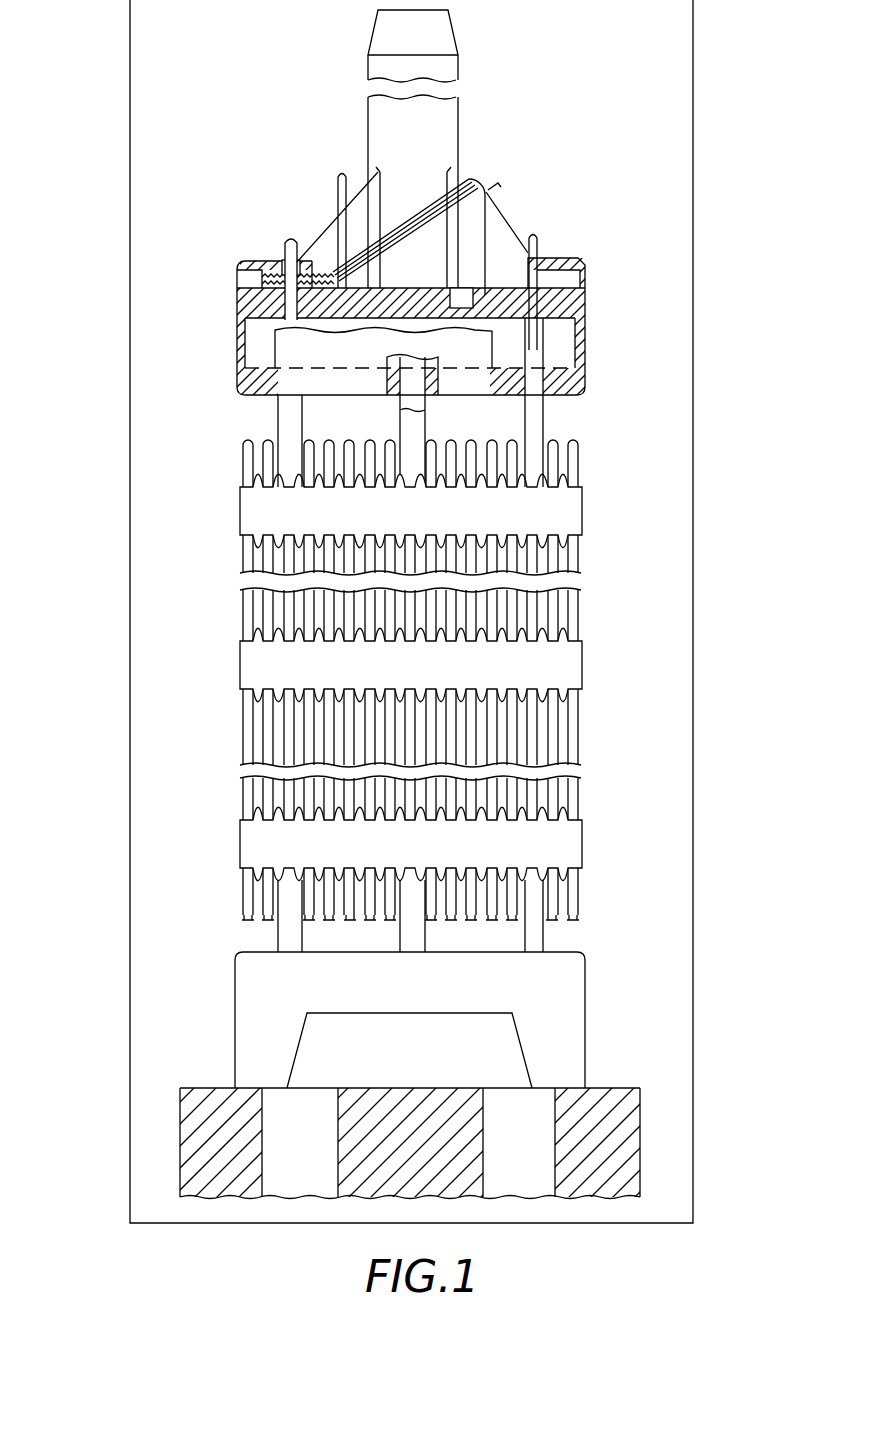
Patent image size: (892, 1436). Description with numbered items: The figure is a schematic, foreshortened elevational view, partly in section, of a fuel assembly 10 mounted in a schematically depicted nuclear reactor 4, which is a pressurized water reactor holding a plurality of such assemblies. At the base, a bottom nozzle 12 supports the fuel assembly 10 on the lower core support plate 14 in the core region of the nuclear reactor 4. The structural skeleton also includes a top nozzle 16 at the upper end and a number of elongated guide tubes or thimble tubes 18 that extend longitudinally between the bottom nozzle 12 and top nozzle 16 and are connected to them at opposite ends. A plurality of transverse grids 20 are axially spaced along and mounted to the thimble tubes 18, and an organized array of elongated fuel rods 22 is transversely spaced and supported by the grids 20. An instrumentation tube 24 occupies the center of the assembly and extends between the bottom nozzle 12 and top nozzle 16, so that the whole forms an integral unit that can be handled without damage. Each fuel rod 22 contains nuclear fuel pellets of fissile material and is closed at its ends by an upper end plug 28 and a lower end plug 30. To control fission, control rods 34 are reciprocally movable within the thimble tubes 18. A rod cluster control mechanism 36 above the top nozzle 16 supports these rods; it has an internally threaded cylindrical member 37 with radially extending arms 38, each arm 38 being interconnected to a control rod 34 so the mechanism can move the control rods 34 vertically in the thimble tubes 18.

The nuclear reactor 4 is at (700, 597).
The fuel assembly 10 is at (419, 630).
The bottom nozzle 12 is at (587, 965).
The lower core support plate 14 is at (622, 1088).
The top nozzle 16 is at (588, 280).
The thimble tubes 18 is at (546, 406).
The transverse grids 20 is at (432, 524).
The fuel rods 22 is at (553, 797).
The instrumentation tube 24 is at (400, 430).
The upper end plug 28 is at (564, 441).
The lower end plug 30 is at (250, 918).
The control rods 34 is at (539, 361).
The rod cluster control mechanism 36 is at (462, 106).
The internally threaded cylindrical member 37 is at (460, 139).
The radially extending arms 38 is at (322, 233).